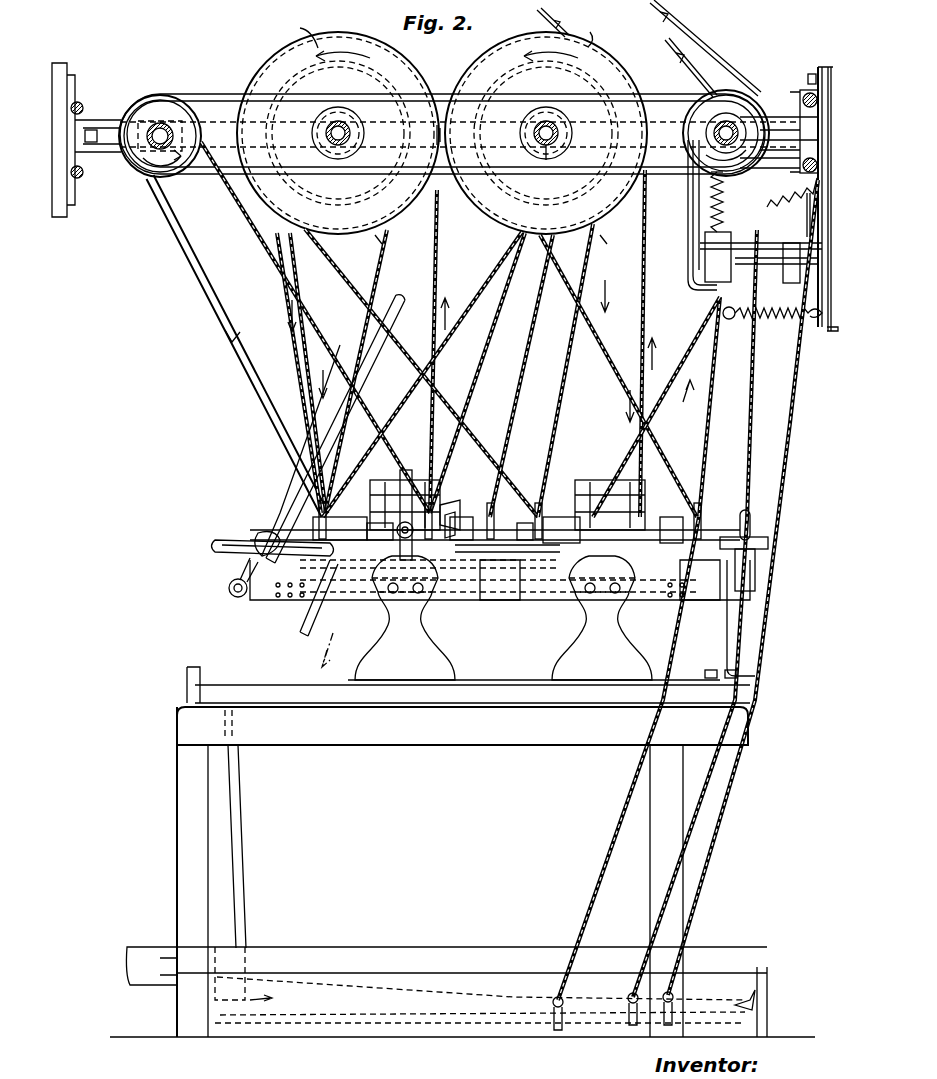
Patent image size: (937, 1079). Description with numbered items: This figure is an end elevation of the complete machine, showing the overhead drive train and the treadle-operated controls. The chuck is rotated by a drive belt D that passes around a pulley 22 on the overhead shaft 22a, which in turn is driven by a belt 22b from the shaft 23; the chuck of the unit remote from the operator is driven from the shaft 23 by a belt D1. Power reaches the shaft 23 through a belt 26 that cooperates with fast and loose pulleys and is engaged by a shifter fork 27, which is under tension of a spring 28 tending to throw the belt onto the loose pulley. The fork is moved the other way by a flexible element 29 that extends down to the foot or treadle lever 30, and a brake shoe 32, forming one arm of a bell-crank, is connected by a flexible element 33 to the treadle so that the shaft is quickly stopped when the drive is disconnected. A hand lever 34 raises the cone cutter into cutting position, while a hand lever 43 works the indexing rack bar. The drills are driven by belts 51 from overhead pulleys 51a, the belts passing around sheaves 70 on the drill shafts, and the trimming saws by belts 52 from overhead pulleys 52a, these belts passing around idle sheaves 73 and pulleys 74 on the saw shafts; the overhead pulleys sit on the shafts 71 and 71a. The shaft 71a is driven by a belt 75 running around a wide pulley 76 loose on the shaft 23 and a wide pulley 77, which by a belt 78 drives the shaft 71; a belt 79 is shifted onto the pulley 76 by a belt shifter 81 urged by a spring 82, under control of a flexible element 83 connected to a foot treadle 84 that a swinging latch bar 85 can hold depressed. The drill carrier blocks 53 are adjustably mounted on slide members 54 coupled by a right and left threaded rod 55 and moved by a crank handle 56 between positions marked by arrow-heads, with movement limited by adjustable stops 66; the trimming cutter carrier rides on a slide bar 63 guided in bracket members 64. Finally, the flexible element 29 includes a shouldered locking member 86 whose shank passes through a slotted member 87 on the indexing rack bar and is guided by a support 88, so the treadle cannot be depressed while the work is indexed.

The pulley 22 is at (205, 168).
The overhead shaft 22a is at (161, 126).
The belt 22b is at (226, 88).
The shaft 23 is at (738, 124).
The belt 26 is at (702, 56).
The shifter fork 27 is at (688, 248).
The spring 28 is at (800, 124).
The flexible element 29 is at (750, 364).
The foot or treadle lever 30 is at (470, 996).
The brake shoe 32 is at (770, 159).
The flexible element 33 is at (790, 423).
The hand lever 34 is at (318, 605).
The hand lever 43 is at (310, 466).
The belts 51 is at (303, 359).
The overhead pulleys 51a is at (506, 234).
The belts 52 is at (365, 444).
The overhead pulleys 52a is at (432, 26).
The carrier blocks 53 is at (318, 504).
The slide members 54 is at (467, 560).
The right and left threaded rod 55 is at (528, 592).
The crank handle 56 is at (258, 538).
The slide bar 63 is at (418, 490).
The bracket members 64 is at (408, 565).
The adjustable stops 66 is at (500, 584).
The sheaves 70 is at (316, 522).
The shaft 71 is at (341, 126).
The shaft 71a is at (548, 155).
The idle pulleys or sheaves 73 is at (396, 478).
The pulleys 74 is at (383, 492).
The belt 75 is at (549, 118).
The wide pulley 76 is at (731, 110).
The wide pulley 77 is at (535, 115).
The belt 78 is at (417, 100).
The belt 79 is at (678, 48).
The belt shifter 81 is at (708, 262).
The spring 82 is at (712, 207).
The flexible element 83 is at (712, 340).
The foot treadle 84 is at (478, 1026).
The swinging latch bar 85 is at (240, 900).
The shouldered locking member 86 is at (750, 524).
The slotted bar or member 87 is at (764, 548).
The support 88 is at (755, 580).
The drive belt D is at (236, 340).
The belt D1 is at (713, 332).